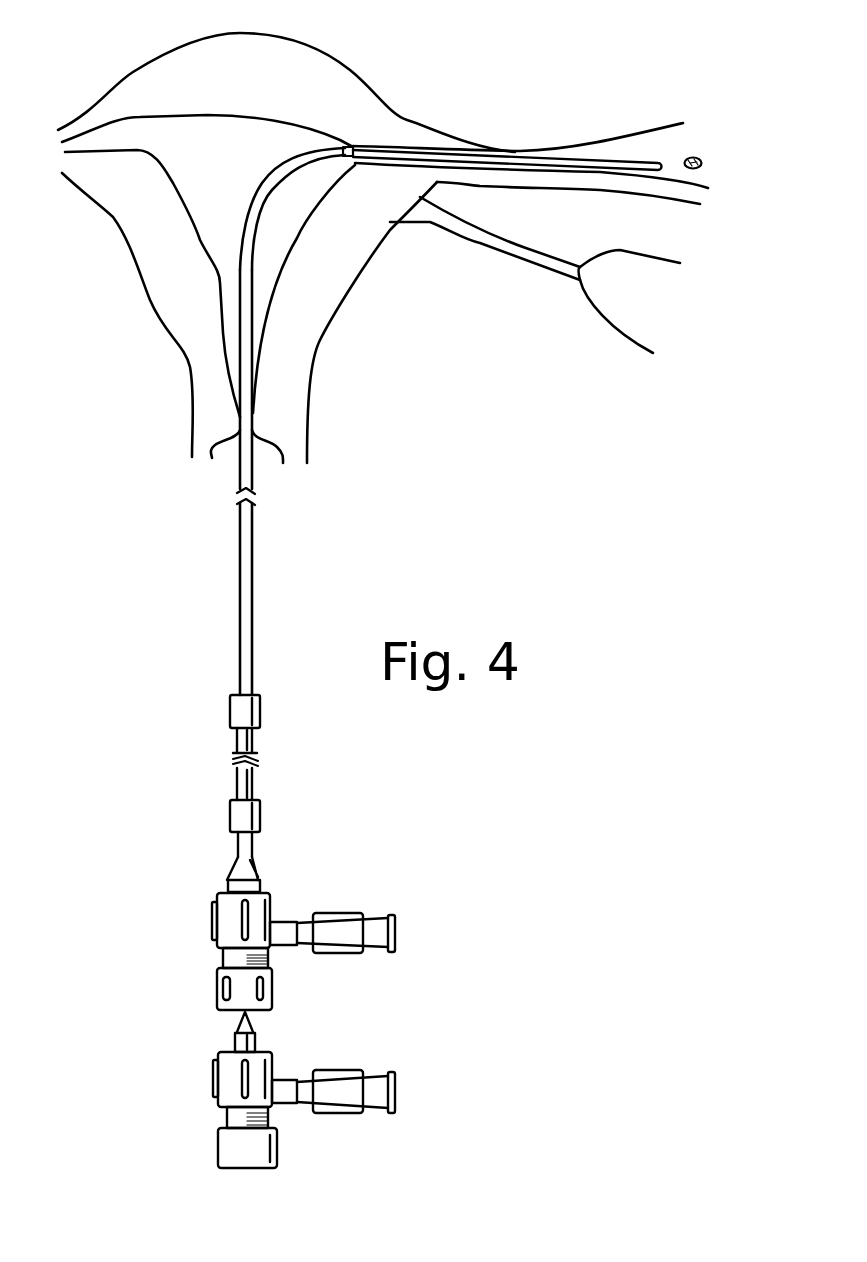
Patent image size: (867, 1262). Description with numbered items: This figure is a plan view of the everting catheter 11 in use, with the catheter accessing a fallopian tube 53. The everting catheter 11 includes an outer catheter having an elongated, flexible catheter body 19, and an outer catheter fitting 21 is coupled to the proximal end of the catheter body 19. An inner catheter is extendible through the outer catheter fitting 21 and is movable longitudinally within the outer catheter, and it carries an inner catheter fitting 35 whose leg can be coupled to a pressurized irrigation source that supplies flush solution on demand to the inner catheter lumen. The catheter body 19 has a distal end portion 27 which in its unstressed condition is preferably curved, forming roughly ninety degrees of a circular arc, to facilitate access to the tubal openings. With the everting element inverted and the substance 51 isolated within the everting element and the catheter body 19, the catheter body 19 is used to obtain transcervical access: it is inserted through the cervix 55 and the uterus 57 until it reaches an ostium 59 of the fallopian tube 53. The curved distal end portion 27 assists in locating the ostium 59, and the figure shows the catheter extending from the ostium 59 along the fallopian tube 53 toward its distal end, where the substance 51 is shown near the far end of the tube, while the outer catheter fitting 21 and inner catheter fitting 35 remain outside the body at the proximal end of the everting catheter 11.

The everting catheter 11 is at (207, 611).
The catheter body 19 is at (250, 332).
The outer catheter fitting 21 is at (197, 936).
The distal end portion 27 is at (250, 200).
The inner catheter fitting 35 is at (197, 1092).
The substance 51 is at (700, 155).
The fallopian tube 53 is at (503, 157).
The cervix 55 is at (250, 423).
The uterus 57 is at (278, 238).
The ostium 59 is at (352, 147).